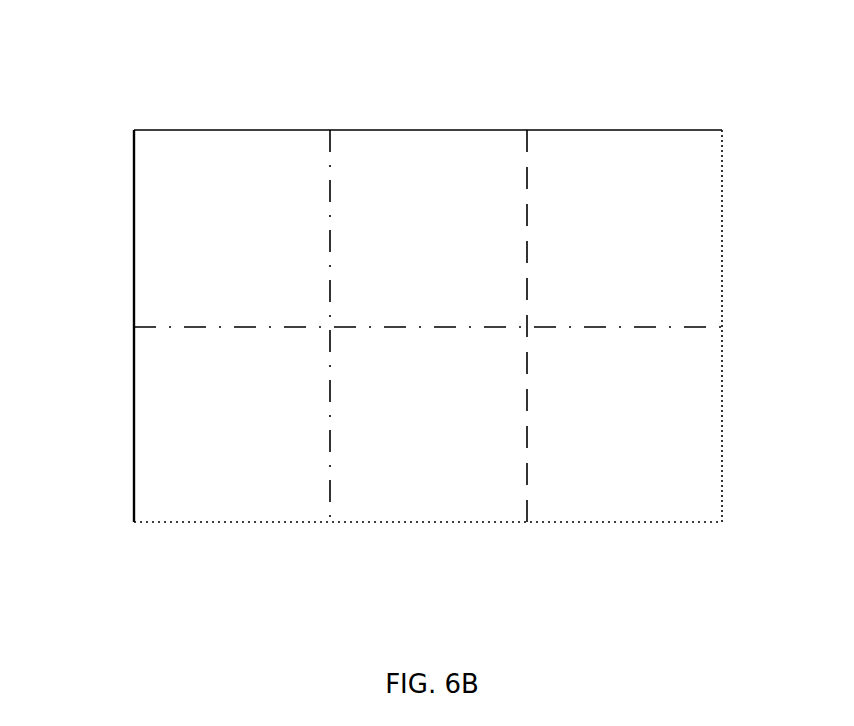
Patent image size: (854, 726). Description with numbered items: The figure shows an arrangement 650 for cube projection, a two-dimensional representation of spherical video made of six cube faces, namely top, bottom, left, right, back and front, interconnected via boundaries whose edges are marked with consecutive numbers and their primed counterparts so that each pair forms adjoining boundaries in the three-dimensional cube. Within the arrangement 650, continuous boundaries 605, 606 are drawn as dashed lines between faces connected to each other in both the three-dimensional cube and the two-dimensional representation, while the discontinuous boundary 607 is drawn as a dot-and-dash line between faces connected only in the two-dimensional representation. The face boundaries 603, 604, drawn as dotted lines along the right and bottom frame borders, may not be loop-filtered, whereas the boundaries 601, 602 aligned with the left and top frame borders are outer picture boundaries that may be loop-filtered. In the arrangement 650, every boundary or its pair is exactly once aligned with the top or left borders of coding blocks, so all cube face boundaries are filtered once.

The face boundary aligned with left frame border 601 is at (134, 292).
The face boundary aligned with top frame border 602 is at (496, 130).
The dotted-line face boundary aligned with frame border 603 is at (722, 278).
The dotted-line face boundary aligned with frame border 604 is at (430, 522).
The continuous boundary 605 is at (330, 493).
The continuous boundary 606 is at (677, 328).
The discontinuous boundary 607 is at (525, 493).
The arrangement for cube projection 650 is at (112, 563).